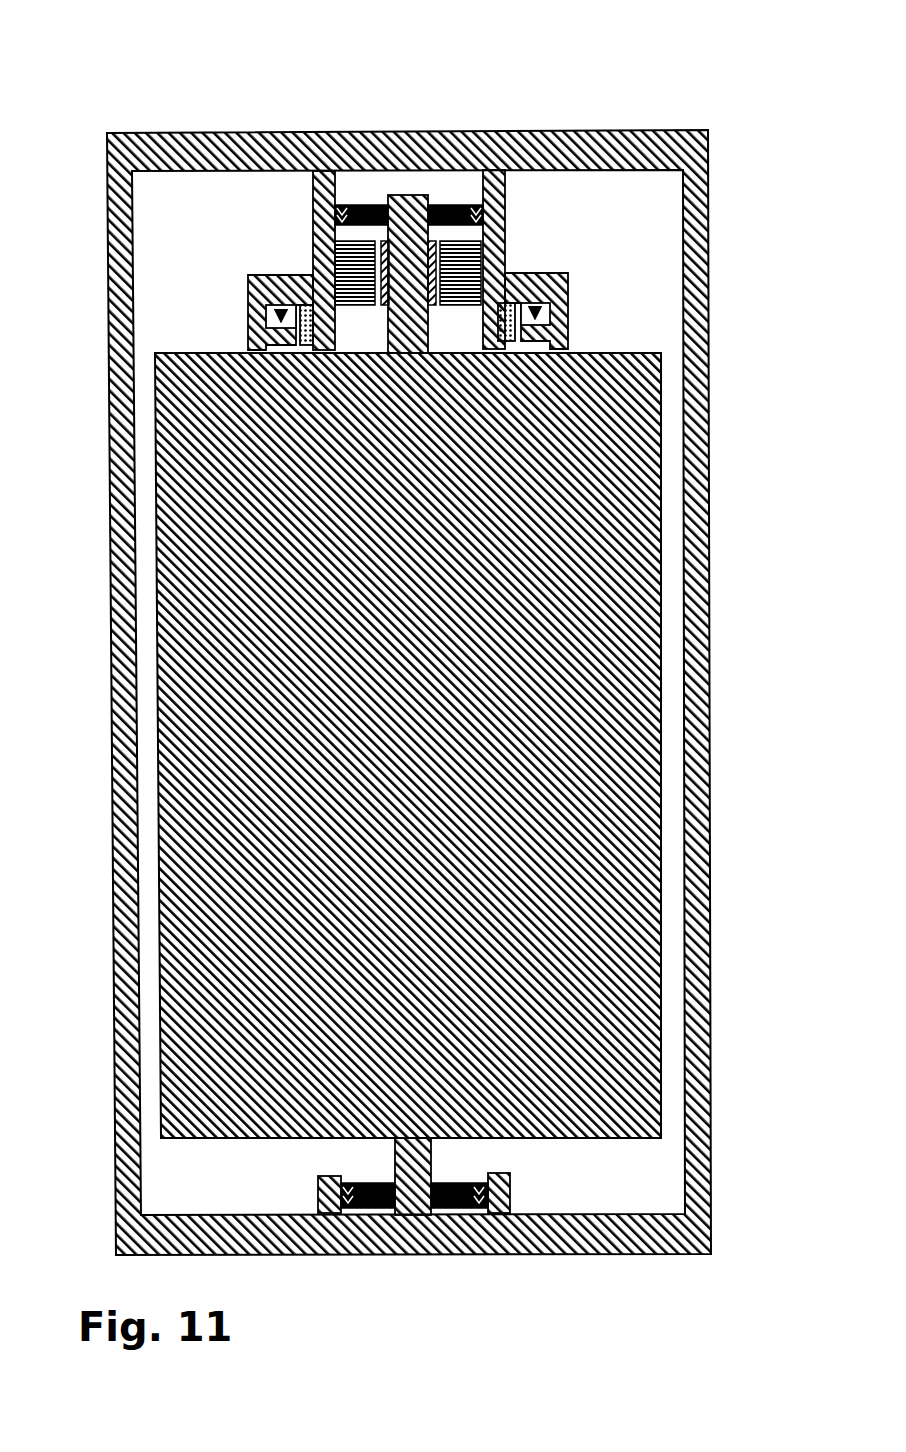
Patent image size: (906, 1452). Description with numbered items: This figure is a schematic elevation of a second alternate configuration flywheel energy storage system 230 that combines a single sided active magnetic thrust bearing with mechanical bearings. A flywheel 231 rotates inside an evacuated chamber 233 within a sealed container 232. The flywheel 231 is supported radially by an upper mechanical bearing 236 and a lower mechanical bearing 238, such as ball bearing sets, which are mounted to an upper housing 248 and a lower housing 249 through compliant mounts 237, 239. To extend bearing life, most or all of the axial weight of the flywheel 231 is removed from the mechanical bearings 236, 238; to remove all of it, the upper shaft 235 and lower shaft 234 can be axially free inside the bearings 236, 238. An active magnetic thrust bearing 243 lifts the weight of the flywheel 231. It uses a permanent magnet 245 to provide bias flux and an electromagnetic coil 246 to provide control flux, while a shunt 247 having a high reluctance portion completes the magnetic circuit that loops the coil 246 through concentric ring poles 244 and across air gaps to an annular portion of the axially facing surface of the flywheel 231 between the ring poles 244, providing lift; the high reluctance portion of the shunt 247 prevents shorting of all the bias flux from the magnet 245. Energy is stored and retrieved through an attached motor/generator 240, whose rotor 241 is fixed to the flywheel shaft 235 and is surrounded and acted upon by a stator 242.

The flywheel energy storage system 230 is at (128, 36).
The flywheel 231 is at (660, 473).
The sealed container 232 is at (702, 630).
The evacuated chamber 233 is at (658, 1162).
The lower shaft 234 is at (408, 1205).
The upper shaft 235 is at (398, 187).
The upper mechanical bearing 236 is at (446, 195).
The compliant mount 237 is at (340, 197).
The lower mechanical bearing 238 is at (452, 1203).
The compliant mount 239 is at (343, 1205).
The motor/generator 240 is at (441, 316).
The rotor 241 is at (377, 298).
The stator 242 is at (341, 298).
The active magnetic thrust bearing 243 is at (282, 350).
The concentric ring poles 244 is at (555, 346).
The permanent magnet 245 is at (540, 297).
The electromagnetic coil 246 is at (510, 296).
The shunt 247 is at (276, 267).
The upper housing 248 is at (304, 188).
The lower housing 249 is at (502, 1180).